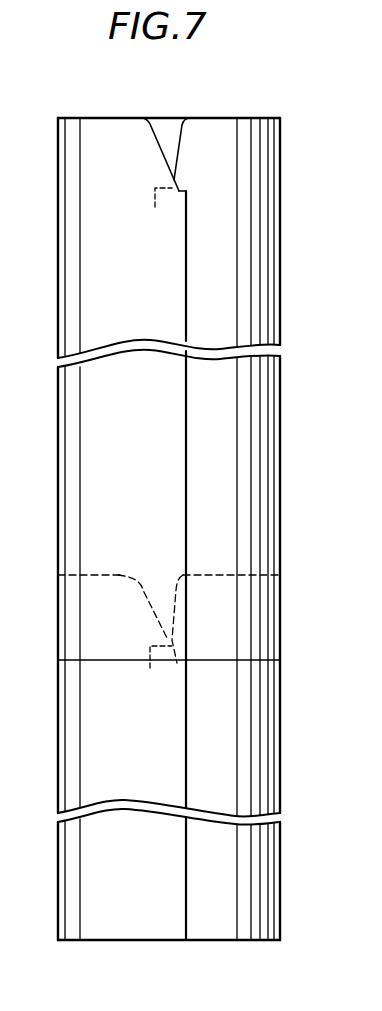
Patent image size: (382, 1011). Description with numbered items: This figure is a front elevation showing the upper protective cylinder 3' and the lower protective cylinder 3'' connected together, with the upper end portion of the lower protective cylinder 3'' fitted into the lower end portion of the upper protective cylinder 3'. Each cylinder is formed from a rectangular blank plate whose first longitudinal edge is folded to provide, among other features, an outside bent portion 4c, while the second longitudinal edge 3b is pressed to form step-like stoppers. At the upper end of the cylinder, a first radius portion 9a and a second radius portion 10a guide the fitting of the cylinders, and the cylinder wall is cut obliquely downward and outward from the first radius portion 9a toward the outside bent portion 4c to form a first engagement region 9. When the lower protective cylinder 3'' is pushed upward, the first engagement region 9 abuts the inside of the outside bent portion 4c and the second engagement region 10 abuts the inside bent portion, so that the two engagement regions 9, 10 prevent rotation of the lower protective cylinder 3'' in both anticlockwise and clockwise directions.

The upper protective cylinder 3' is at (167, 467).
The lower protective cylinder 3'' is at (163, 784).
The second longitudinal edge 3b is at (205, 128).
The outside bent portion 4c is at (186, 467).
The first engagement region 9 is at (180, 191).
The first radius portion 9a is at (148, 117).
The second engagement region 10 is at (155, 206).
The second radius portion 10a is at (178, 117).